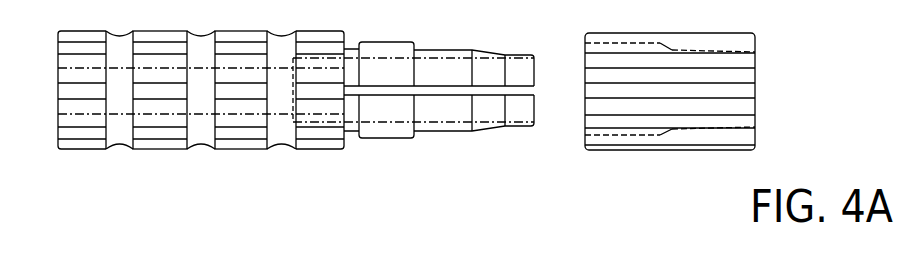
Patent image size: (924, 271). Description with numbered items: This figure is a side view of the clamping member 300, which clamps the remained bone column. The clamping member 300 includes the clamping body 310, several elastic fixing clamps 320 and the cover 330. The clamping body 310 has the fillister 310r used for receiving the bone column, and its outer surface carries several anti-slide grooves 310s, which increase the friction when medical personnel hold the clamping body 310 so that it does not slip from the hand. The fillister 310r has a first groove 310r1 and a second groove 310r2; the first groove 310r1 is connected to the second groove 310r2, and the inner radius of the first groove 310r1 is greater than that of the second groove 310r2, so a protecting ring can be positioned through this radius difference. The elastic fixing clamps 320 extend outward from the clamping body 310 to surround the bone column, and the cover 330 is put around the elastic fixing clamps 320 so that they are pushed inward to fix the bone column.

The clamping member 300 is at (830, 52).
The clamping body 310 is at (178, 149).
The anti-slide grooves 310s is at (126, 151).
The fillister 310r is at (253, 149).
The first groove 310r1 is at (318, 94).
The second groove 310r2 is at (203, 94).
The elastic fixing clamps 320 is at (445, 125).
The cover 330 is at (630, 156).